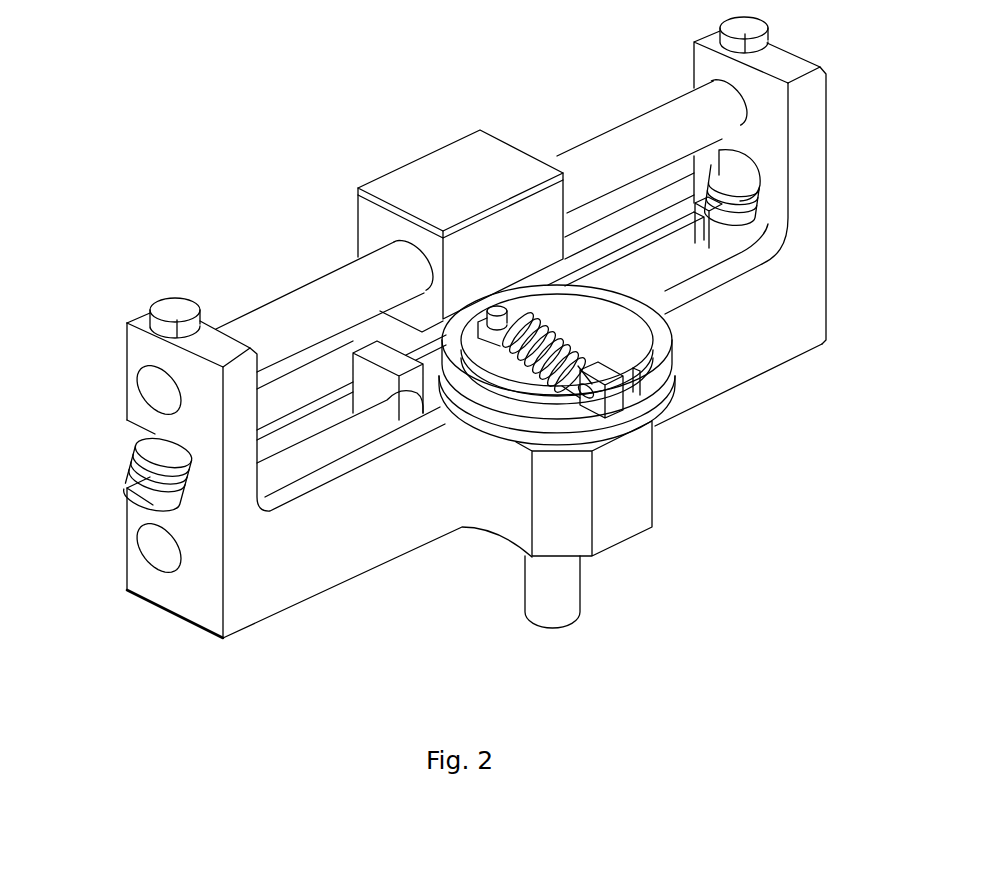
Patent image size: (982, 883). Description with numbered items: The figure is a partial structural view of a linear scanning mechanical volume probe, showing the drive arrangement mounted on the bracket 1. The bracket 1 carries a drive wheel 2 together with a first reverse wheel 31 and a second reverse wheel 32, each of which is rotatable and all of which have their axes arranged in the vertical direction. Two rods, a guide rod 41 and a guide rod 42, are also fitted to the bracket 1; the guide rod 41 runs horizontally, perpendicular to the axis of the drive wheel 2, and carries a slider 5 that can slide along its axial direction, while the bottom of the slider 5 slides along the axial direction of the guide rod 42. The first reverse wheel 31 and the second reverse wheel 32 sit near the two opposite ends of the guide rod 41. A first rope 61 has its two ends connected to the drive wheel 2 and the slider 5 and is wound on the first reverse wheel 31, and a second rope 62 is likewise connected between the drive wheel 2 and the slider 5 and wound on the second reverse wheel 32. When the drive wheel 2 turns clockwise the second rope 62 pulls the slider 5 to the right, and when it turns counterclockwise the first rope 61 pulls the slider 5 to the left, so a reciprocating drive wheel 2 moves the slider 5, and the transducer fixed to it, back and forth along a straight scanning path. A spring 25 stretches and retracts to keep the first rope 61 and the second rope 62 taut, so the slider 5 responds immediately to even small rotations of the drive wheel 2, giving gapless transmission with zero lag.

The bracket 1 is at (720, 348).
The drive wheel 2 is at (610, 317).
The slider 5 is at (443, 177).
The spring 25 is at (580, 377).
The first reverse wheel 31 is at (148, 455).
The second reverse wheel 32 is at (757, 207).
The guide rod 41 is at (323, 303).
The guide rod 42 is at (312, 457).
The first rope 61 is at (665, 378).
The second rope 62 is at (543, 430).